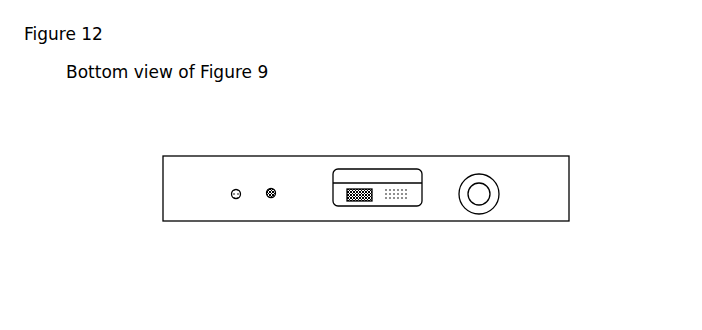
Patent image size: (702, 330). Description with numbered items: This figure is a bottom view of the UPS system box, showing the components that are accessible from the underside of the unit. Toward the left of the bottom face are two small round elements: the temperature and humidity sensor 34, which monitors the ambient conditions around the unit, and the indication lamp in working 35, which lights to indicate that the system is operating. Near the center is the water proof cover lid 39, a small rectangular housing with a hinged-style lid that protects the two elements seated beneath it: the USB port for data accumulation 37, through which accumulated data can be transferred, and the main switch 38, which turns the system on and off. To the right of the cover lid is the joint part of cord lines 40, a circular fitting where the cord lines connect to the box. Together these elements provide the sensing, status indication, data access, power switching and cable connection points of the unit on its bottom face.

The temperature and humidity sensor 34 is at (231, 194).
The indication lamp in working 35 is at (269, 198).
The USB port for data accumulation 37 is at (347, 195).
The main switch 38 is at (397, 200).
The water proof cover lid 39 is at (412, 178).
The joint part of cord lines 40 is at (499, 193).